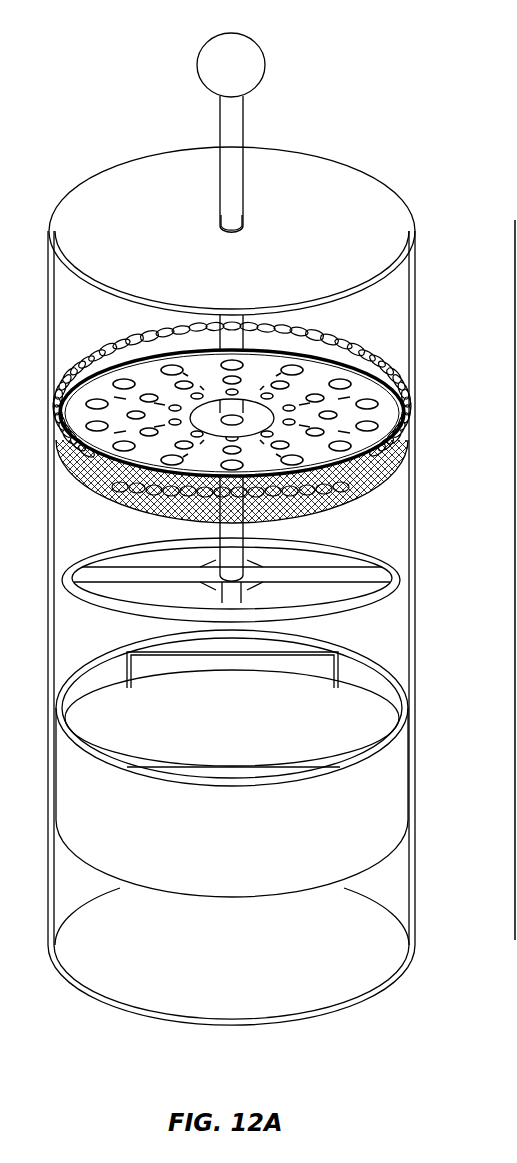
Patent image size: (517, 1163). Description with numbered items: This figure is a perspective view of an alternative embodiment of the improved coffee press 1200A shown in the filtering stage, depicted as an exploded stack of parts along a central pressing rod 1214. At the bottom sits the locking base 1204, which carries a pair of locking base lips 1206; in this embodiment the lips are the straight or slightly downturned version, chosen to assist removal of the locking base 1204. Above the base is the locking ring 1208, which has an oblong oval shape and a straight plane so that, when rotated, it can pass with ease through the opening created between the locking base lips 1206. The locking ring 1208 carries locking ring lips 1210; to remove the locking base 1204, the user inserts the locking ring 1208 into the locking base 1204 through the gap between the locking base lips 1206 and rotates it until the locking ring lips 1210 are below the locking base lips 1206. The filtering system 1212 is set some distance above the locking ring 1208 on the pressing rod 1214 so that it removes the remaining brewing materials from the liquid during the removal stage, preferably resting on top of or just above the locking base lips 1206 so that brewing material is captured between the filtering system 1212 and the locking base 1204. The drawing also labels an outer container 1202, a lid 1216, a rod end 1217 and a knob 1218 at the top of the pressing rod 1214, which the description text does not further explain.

The improved coffee press 1200A is at (276, 545).
The outer cylindrical container 1202 is at (416, 362).
The locking base 1204 is at (379, 875).
The locking base lip(s) 1206 is at (198, 737).
The locking ring 1208 is at (269, 586).
The locking ring lip(s) 1210 is at (381, 623).
The filtering system 1212 is at (328, 329).
The pressing rod 1214 is at (243, 125).
The lid 1216 is at (338, 161).
The rod end 1217 is at (237, 244).
The knob 1218 is at (232, 33).